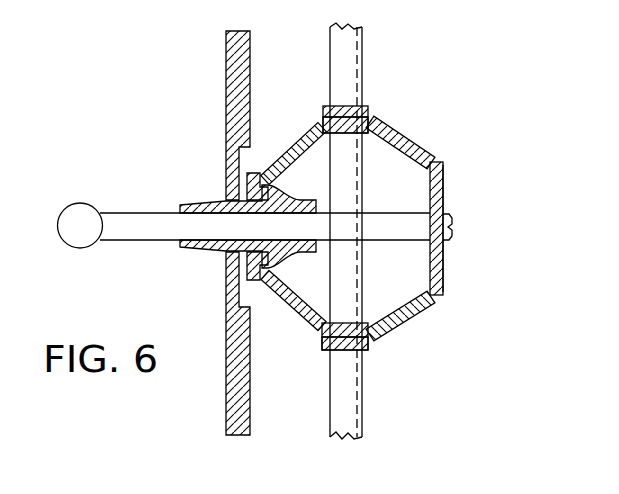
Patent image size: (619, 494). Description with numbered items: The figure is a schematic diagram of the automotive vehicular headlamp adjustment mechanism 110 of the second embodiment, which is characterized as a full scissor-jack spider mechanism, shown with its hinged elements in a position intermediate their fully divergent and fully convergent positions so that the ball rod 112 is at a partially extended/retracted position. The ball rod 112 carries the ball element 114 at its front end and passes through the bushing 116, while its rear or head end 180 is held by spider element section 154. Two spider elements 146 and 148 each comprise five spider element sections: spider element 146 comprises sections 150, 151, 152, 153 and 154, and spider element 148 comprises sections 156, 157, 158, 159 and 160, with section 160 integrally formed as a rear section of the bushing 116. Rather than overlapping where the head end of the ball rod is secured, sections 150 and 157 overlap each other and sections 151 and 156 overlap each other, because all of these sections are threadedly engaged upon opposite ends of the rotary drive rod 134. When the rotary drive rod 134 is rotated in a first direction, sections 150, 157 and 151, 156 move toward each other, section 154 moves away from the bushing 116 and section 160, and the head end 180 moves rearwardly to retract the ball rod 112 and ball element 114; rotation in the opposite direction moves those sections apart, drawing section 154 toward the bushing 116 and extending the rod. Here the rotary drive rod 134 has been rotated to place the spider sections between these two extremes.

The headlamp adjustment mechanism 110 is at (480, 152).
The ball rod 112 is at (153, 235).
The ball element 114 is at (77, 210).
The bushing 116 is at (202, 202).
The rotary drive rod 134 is at (356, 60).
The spider element 146 is at (441, 158).
The spider element 148 is at (289, 151).
The spider element section 150 is at (364, 107).
The spider element section 151 is at (361, 349).
The spider element section 152 is at (404, 137).
The spider element section 153 is at (403, 325).
The spider element section 154 is at (439, 198).
The spider element section 156 is at (321, 338).
The spider element section 157 is at (354, 134).
The spider element section 158 is at (289, 311).
The spider element section 159 is at (284, 150).
The spider element section 160 is at (280, 255).
The rear or head end of the ball rod 180 is at (451, 221).